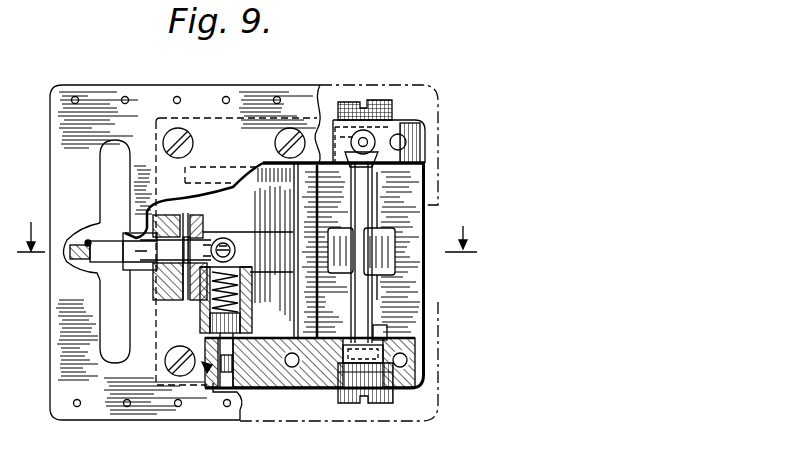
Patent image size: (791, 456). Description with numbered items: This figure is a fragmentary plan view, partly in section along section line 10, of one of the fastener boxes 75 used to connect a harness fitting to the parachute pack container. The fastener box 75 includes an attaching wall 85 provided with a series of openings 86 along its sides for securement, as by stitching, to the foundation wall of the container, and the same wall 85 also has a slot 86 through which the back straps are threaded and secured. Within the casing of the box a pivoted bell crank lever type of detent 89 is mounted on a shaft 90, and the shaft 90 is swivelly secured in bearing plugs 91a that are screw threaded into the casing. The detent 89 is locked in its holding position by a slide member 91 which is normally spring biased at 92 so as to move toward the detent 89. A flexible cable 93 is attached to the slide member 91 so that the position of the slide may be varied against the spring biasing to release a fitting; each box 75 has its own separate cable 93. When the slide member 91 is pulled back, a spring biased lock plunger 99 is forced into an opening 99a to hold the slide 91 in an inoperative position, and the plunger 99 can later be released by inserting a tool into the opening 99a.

The section line 10- 10 is at (247, 225).
The fastener box 75 is at (210, 392).
The attaching wall 85 is at (68, 303).
The openings 86 is at (108, 337).
The detent 89 is at (380, 232).
The shaft 90 is at (366, 318).
The slide member 91 is at (286, 218).
The bearing plugs 91a is at (392, 98).
The spring biasing 92 is at (212, 232).
The flexible cable 93 is at (72, 250).
The lock plunger 99 is at (250, 313).
The opening 99a is at (236, 390).